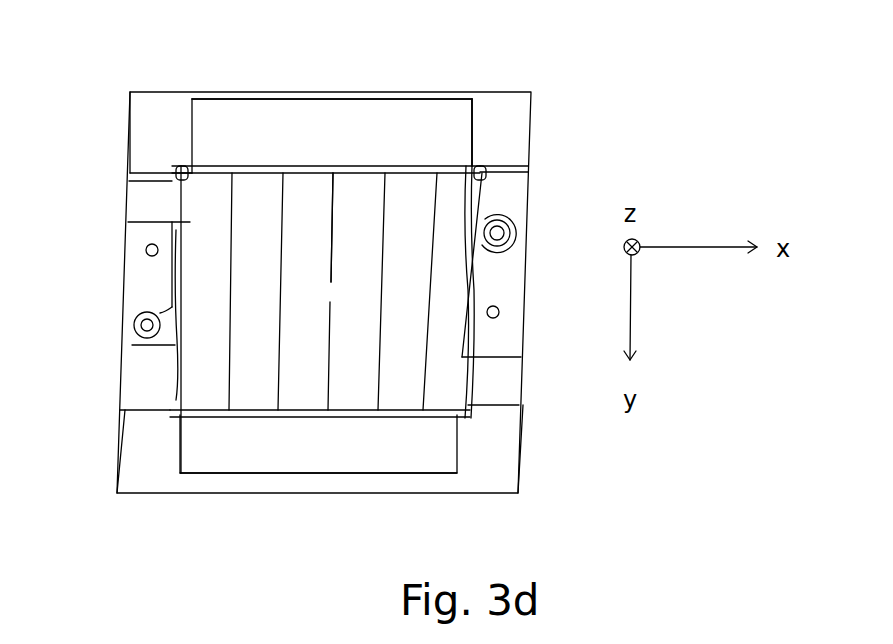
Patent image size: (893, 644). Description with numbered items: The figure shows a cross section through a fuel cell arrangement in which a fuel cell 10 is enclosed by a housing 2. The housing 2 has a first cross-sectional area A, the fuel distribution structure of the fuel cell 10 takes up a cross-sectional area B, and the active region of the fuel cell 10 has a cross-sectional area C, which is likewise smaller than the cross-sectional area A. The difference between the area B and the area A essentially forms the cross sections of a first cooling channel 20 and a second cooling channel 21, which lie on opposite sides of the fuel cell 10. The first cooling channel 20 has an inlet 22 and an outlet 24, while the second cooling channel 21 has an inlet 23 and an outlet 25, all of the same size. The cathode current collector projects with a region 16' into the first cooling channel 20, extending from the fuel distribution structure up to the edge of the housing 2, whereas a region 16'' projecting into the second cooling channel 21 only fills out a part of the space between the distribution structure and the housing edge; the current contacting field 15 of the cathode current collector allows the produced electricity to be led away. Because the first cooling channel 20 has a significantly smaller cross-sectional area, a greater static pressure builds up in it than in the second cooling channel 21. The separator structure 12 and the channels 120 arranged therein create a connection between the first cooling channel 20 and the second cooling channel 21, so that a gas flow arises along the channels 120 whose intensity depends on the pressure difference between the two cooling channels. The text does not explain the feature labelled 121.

The housing 2 is at (416, 75).
The fuel cell 10 is at (125, 290).
The separator structure 12 is at (477, 158).
The current contacting field 15 is at (130, 195).
The region projecting into the first cooling channel 16' is at (332, 74).
The region projecting into the second cooling channel 16'' is at (318, 503).
The first cooling channel 20 is at (162, 123).
The second cooling channel 21 is at (150, 455).
The inlet of the first cooling channel 22 is at (125, 125).
The inlet of the second cooling channel 23 is at (117, 452).
The outlet of the first cooling channel 24 is at (532, 132).
The outlet of the second cooling channel 25 is at (518, 450).
The channels 120 is at (262, 192).
The clip 121 is at (165, 178).
The first cross-sectional area A is at (507, 110).
The cross-sectional area of the fuel distribution structure B is at (498, 218).
The cross-sectional area of the active region C is at (367, 302).